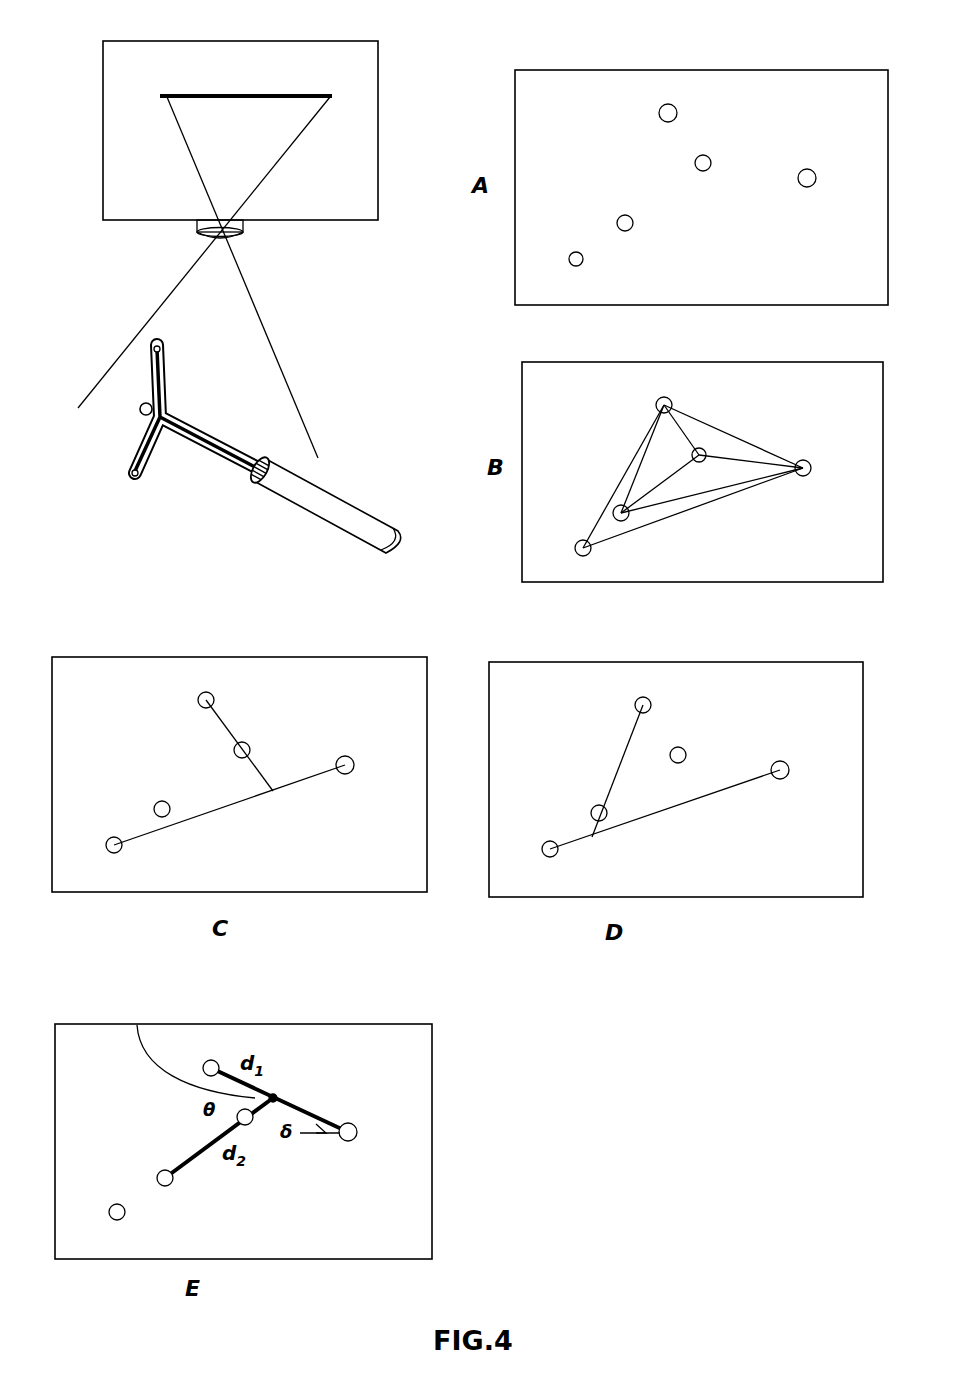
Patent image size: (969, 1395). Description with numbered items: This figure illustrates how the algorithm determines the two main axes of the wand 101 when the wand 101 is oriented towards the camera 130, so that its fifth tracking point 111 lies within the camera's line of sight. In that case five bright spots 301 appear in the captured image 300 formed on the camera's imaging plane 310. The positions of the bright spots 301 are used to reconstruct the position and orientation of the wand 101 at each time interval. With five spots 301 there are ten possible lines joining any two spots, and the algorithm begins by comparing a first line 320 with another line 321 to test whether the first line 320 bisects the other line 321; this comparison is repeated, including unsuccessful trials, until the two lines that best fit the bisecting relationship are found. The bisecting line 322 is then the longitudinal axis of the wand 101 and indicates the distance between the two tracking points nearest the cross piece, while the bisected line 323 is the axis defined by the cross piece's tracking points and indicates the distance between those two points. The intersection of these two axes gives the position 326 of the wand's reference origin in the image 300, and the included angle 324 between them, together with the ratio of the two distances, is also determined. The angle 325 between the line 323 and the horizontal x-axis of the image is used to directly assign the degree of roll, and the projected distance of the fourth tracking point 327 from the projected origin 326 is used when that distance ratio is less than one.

The wand 101 is at (266, 449).
The fifth tracking point 111 is at (250, 481).
The camera 130 is at (338, 208).
The captured image 300 is at (558, 68).
The bright spots 301 is at (677, 104).
The imaging plane 310 is at (332, 96).
The first line 320 is at (228, 717).
The other line 321 is at (160, 828).
The line indicating distance d2 322 is at (188, 1155).
The line indicating distance d1 323 is at (292, 1100).
The included angle θ 324 is at (137, 1025).
The angle δ 325 is at (305, 1140).
The position of the reference origin 326 is at (276, 1094).
The fourth tracking point 327 is at (166, 1187).